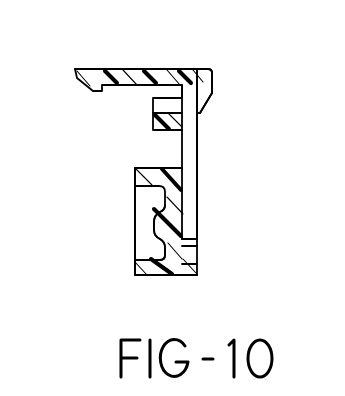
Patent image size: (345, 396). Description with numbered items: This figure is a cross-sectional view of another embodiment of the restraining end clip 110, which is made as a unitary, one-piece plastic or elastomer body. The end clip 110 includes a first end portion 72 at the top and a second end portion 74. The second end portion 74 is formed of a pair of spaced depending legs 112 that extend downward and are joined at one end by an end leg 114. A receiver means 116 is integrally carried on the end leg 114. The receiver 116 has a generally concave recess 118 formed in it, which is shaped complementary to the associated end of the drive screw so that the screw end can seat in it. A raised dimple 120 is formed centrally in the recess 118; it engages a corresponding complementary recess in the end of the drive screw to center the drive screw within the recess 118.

The restraining end clip 110 is at (92, 52).
The first end portion 72 is at (212, 20).
The second end portion 74 is at (224, 108).
The receiver means 116 is at (135, 160).
The spaced depending legs 112 is at (198, 163).
The raised dimple 120 is at (158, 214).
The concave recess 118 is at (150, 260).
The end leg 114 is at (173, 278).